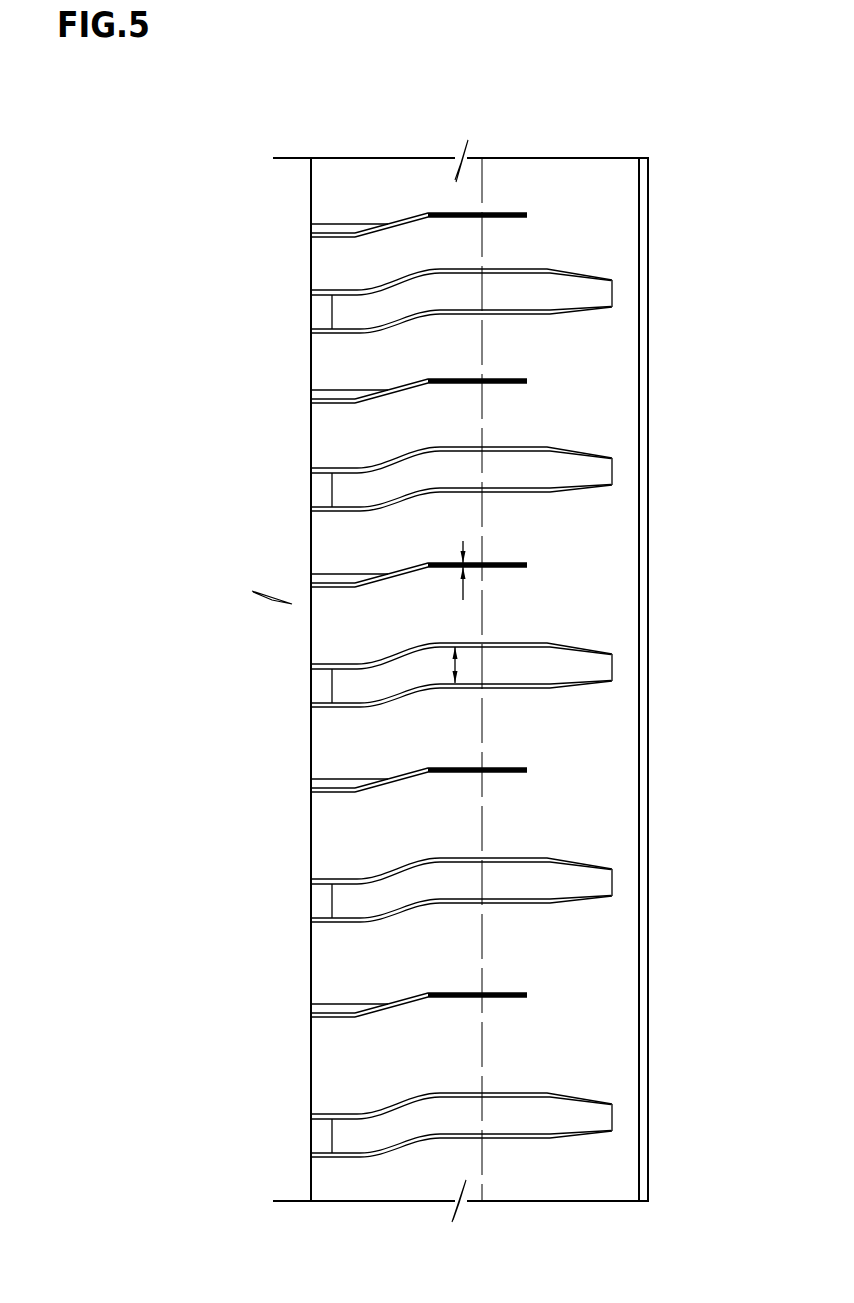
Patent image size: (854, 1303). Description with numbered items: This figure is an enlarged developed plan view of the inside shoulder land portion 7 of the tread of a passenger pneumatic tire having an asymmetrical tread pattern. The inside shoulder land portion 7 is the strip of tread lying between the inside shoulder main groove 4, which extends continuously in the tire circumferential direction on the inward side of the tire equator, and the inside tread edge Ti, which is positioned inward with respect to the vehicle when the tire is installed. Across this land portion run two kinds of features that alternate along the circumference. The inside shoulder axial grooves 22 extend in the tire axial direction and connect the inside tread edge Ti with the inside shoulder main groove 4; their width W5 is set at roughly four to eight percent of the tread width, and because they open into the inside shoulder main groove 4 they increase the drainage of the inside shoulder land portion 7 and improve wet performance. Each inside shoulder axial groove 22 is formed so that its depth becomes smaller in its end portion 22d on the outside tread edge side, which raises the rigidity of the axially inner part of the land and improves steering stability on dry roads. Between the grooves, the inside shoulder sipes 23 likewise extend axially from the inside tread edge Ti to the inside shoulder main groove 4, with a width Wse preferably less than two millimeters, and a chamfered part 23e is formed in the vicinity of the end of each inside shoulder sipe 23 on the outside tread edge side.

The inside shoulder main groove 4 is at (291, 198).
The inside shoulder land portion 7 is at (400, 190).
The inside tread edge Ti is at (482, 193).
The inside shoulder axial groove 22 is at (368, 713).
The end portion of inside shoulder axial groove 22d is at (320, 491).
The inside shoulder sipe 23 is at (326, 615).
The chamfered part 23e is at (337, 784).
The width of inside shoulder sipe Wse is at (517, 568).
The width of inside shoulder axial groove W5 is at (457, 666).